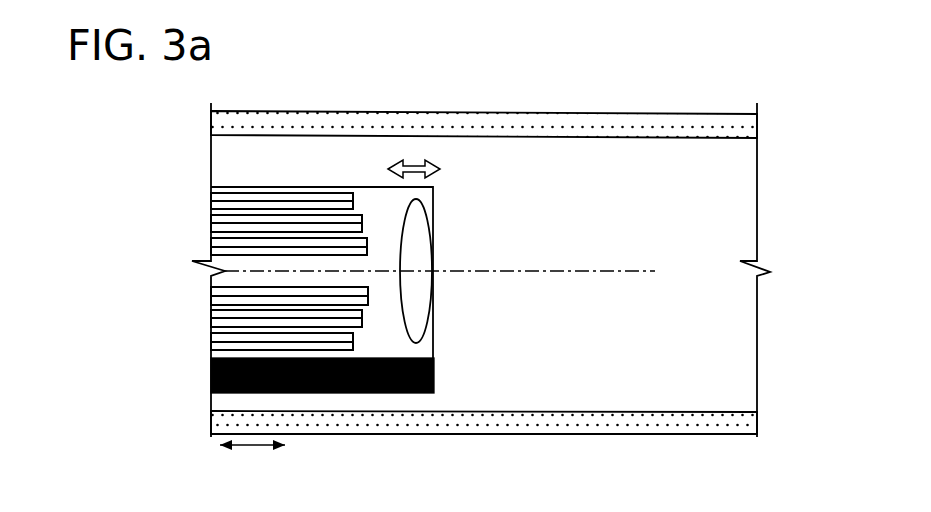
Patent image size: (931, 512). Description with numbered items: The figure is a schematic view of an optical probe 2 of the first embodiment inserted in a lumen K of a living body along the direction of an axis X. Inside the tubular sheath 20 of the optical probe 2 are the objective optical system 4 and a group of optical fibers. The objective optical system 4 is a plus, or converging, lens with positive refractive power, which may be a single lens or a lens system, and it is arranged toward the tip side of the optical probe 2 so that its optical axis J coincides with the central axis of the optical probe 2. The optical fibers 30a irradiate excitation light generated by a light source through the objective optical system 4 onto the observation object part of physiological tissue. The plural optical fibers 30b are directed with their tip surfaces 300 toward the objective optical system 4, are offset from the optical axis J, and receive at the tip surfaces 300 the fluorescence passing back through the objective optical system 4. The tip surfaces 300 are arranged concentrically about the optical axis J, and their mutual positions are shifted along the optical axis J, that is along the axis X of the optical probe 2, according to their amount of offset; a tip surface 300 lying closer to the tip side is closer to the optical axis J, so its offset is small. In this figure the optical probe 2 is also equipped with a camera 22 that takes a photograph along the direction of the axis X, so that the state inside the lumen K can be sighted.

The optical probe 2 is at (530, 148).
The lumen K is at (728, 137).
The optical axis J is at (451, 273).
The tubular sheath 20 is at (313, 186).
The optical fiber for irradiating excitation light 30a is at (268, 253).
The optical fiber for receiving light 30b is at (211, 199).
The tip surface 300 is at (391, 147).
The objective optical system 4 is at (430, 325).
The camera 22 is at (210, 374).
The axis X is at (252, 460).